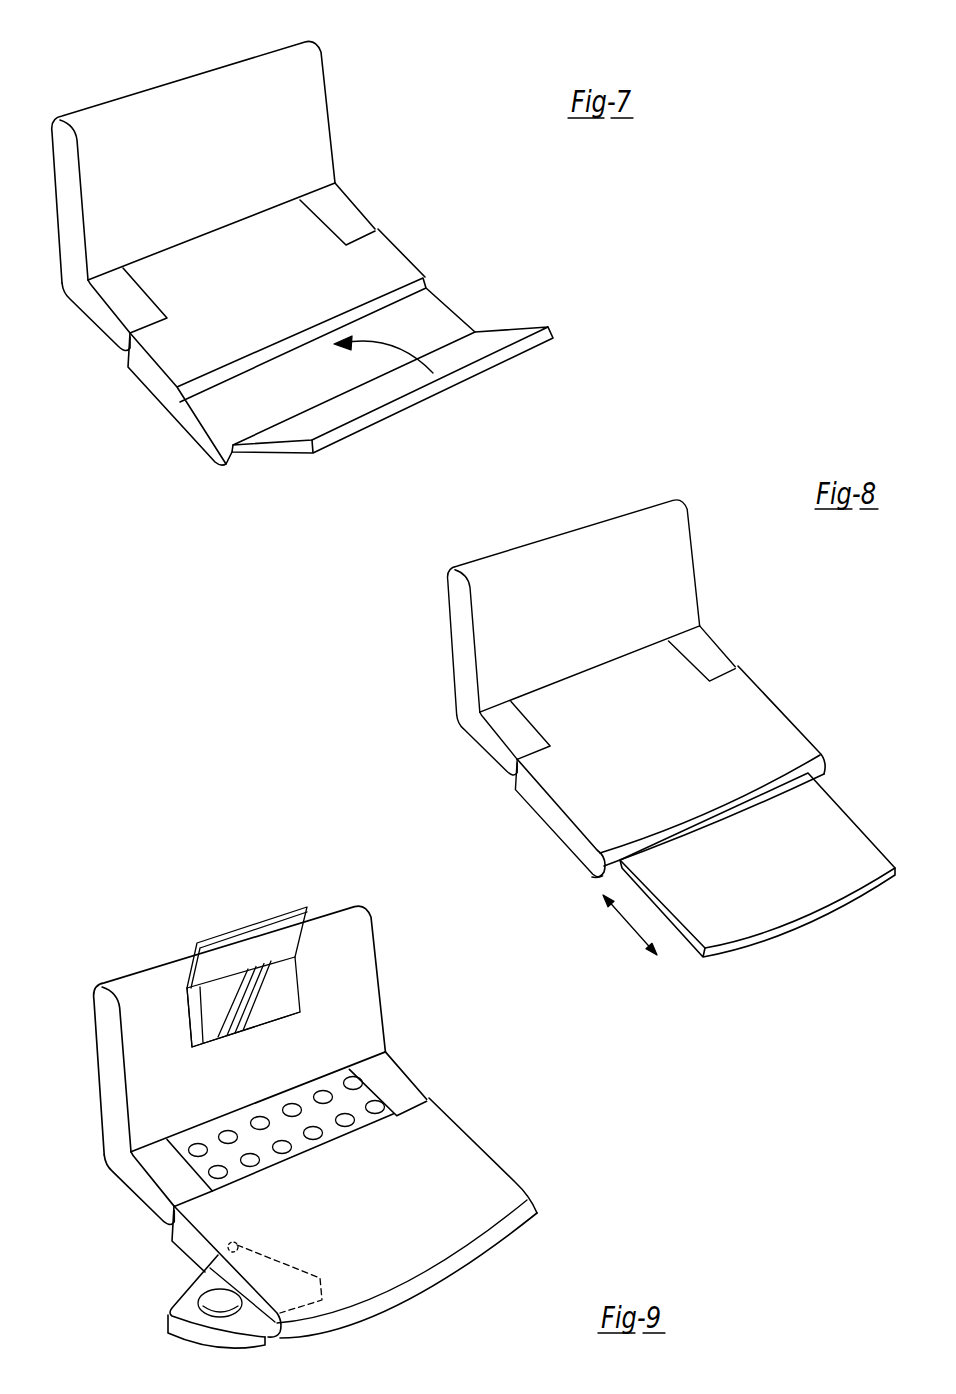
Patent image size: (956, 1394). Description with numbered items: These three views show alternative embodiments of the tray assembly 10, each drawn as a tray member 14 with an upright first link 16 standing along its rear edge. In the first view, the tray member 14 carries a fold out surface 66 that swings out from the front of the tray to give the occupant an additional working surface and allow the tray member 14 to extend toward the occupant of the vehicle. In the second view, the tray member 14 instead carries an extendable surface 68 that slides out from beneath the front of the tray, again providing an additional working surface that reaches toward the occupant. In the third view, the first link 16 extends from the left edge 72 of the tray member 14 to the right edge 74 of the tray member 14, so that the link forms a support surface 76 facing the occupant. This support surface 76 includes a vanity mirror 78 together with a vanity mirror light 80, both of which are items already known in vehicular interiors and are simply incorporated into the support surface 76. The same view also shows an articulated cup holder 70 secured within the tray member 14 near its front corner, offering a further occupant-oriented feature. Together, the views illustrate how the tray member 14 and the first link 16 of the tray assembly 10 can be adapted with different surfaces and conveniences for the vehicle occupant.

In FIG. 7, the tray assembly 10 is at (134, 84).
In FIG. 8, the tray assembly 10 is at (607, 489).
In FIG. 7, the tray member 14 is at (404, 252).
In FIG. 8, the tray member 14 is at (770, 697).
In FIG. 9, the tray member 14 is at (473, 1203).
In FIG. 7, the first link 16 is at (333, 140).
In FIG. 8, the first link 16 is at (697, 563).
In FIG. 9, the first link 16 is at (363, 920).
In FIG. 7, the fold out surface 66 is at (548, 327).
In FIG. 8, the extendable surface 68 is at (840, 838).
In FIG. 9, the articulated cup holder 70 is at (208, 1297).
In FIG. 9, the left edge 72 is at (197, 1247).
In FIG. 9, the right edge 74 is at (480, 1140).
In FIG. 9, the support surface 76 is at (330, 920).
In FIG. 9, the vanity mirror 78 is at (212, 990).
In FIG. 9, the vanity mirror light 80 is at (195, 1010).